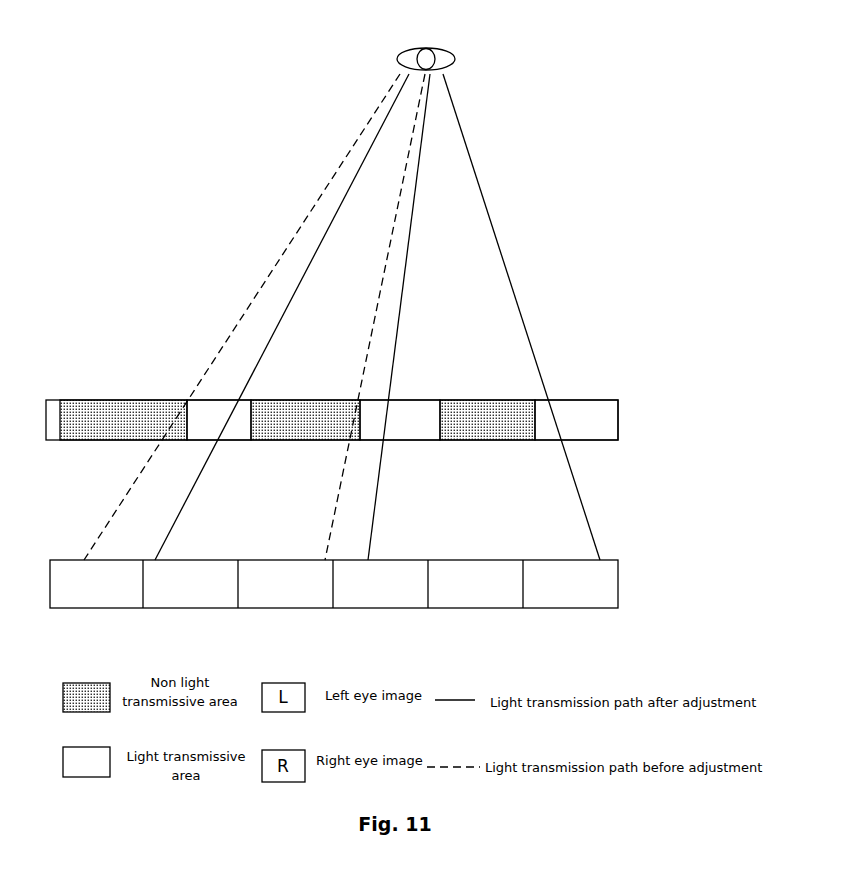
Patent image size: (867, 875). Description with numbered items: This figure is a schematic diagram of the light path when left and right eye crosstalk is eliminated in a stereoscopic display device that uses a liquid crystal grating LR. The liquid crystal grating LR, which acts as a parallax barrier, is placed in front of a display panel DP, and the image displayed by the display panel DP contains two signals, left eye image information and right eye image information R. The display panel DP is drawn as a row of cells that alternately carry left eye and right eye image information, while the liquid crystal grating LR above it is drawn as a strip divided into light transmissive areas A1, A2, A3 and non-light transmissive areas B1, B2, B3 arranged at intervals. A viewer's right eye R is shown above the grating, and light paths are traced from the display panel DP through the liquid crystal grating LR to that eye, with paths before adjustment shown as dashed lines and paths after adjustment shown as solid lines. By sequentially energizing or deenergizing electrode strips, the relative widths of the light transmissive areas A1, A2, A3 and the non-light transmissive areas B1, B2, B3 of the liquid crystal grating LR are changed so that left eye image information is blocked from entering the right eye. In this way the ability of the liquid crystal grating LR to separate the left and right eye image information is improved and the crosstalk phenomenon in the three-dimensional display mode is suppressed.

The right eye image information R is at (426, 48).
The liquid crystal grating LR is at (388, 395).
The display panel DP is at (388, 557).
The light transmissive area A1 is at (123, 420).
The light transmissive area A2 is at (305, 420).
The light transmissive area A3 is at (487, 420).
The non-light transmissive area B1 is at (219, 420).
The non-light transmissive area B2 is at (400, 420).
The non-light transmissive area B3 is at (576, 420).